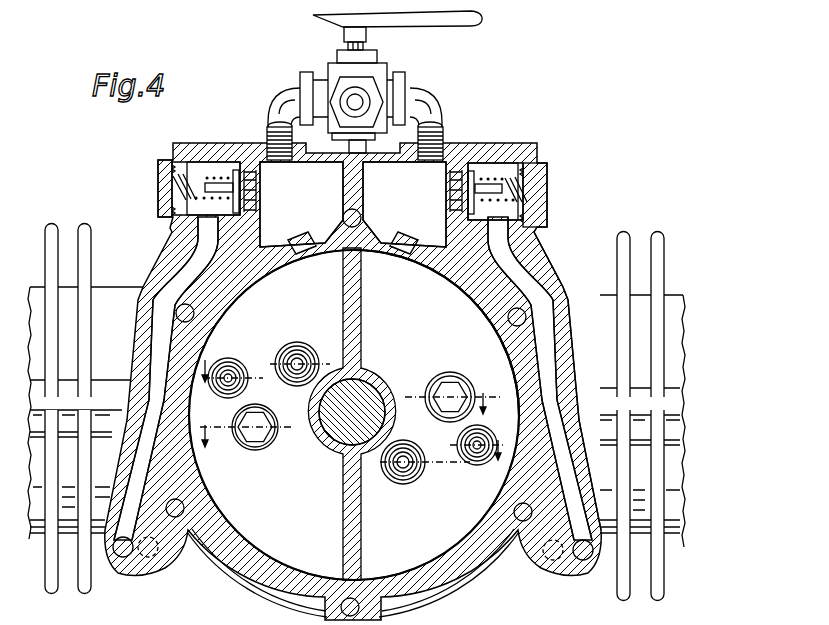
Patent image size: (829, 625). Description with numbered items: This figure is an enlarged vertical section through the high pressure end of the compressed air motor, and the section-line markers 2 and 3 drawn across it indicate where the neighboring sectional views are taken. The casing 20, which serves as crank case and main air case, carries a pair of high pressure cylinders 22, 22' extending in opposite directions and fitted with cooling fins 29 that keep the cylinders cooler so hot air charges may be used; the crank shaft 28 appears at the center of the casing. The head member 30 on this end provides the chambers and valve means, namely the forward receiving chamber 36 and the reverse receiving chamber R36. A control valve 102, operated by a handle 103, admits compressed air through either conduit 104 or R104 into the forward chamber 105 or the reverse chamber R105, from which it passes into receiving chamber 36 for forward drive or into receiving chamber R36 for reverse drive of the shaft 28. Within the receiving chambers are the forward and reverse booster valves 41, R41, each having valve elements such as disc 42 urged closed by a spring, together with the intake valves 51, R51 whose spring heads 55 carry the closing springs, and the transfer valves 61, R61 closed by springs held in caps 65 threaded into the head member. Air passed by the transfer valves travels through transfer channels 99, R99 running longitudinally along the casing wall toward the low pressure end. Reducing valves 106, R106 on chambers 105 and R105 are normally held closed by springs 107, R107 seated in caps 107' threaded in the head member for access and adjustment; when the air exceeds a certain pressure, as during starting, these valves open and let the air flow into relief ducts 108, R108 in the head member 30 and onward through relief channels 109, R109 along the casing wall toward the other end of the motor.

The casing 20 is at (520, 152).
The HP cylinder 22 is at (85, 393).
The HP cylinder 22' is at (634, 408).
The crank shaft 28 is at (340, 440).
The cooling fins 29 is at (82, 248).
The head member 30 is at (553, 277).
The receiving chamber 36 is at (354, 415).
The receiving chamber R36 is at (436, 332).
The booster valve 41 is at (289, 348).
The booster valve R41 is at (418, 472).
The valve element 42 is at (298, 356).
The intake valve 51 is at (242, 384).
The intake valve R51 is at (470, 463).
The spring head 55 is at (232, 388).
The transfer valve 61 is at (247, 445).
The transfer valve R61 is at (470, 369).
The cap 65 is at (268, 451).
The transfer channel 99 is at (148, 562).
The transfer channel R99 is at (553, 563).
The control valve 102 is at (372, 92).
The handle 103 is at (460, 27).
The conduit 104 is at (270, 98).
The conduit R104 is at (443, 108).
The forward chamber 105 is at (301, 204).
The reverse chamber R105 is at (404, 204).
The reducing valve 106 is at (250, 198).
The reducing valve R106 is at (456, 198).
The spring 107 is at (206, 188).
The cap 107' is at (145, 188).
The spring R107 is at (507, 195).
The relief duct 108 is at (166, 378).
The relief duct R108 is at (540, 378).
The relief channel 109 is at (120, 560).
The relief channel R109 is at (583, 562).
The section line 2 is at (352, 448).
The section line 3 is at (349, 383).